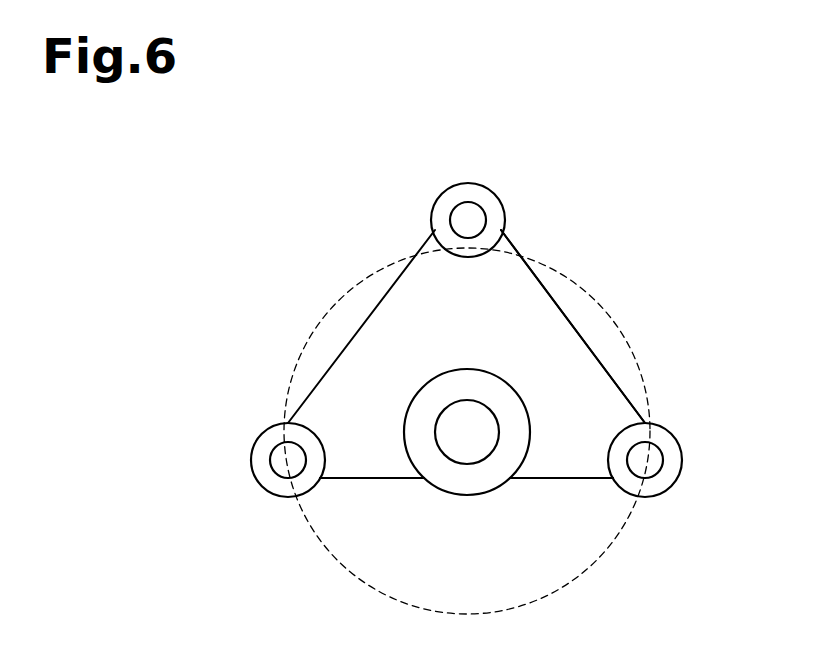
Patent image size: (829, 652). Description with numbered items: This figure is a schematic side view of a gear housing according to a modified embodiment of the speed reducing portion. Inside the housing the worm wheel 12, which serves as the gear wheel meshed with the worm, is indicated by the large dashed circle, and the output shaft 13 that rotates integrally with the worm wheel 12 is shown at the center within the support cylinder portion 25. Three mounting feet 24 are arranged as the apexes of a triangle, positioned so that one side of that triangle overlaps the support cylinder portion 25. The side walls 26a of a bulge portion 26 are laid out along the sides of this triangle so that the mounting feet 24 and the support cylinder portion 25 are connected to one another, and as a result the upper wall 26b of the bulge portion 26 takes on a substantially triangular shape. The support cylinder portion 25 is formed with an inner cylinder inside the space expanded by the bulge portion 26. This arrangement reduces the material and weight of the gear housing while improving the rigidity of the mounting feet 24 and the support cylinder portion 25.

The worm wheel 12 is at (602, 552).
The output shaft 13 is at (465, 457).
The mounting feet 24 is at (468, 183).
The support cylinder portion 25 is at (502, 479).
The bulge portion 26 is at (343, 479).
The side walls 26a is at (380, 292).
The upper wall 26b is at (612, 383).